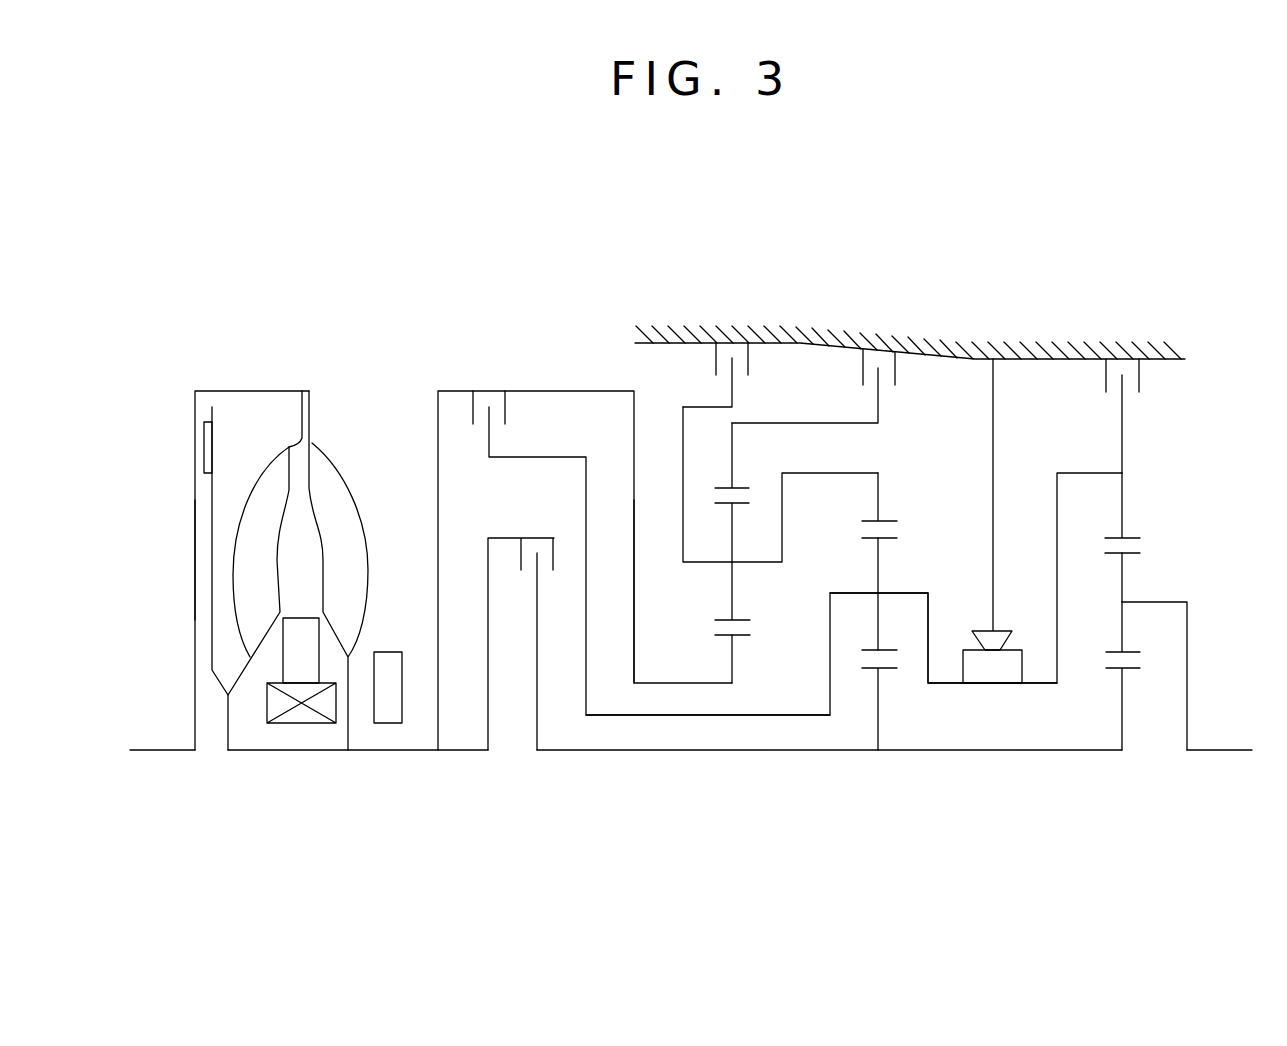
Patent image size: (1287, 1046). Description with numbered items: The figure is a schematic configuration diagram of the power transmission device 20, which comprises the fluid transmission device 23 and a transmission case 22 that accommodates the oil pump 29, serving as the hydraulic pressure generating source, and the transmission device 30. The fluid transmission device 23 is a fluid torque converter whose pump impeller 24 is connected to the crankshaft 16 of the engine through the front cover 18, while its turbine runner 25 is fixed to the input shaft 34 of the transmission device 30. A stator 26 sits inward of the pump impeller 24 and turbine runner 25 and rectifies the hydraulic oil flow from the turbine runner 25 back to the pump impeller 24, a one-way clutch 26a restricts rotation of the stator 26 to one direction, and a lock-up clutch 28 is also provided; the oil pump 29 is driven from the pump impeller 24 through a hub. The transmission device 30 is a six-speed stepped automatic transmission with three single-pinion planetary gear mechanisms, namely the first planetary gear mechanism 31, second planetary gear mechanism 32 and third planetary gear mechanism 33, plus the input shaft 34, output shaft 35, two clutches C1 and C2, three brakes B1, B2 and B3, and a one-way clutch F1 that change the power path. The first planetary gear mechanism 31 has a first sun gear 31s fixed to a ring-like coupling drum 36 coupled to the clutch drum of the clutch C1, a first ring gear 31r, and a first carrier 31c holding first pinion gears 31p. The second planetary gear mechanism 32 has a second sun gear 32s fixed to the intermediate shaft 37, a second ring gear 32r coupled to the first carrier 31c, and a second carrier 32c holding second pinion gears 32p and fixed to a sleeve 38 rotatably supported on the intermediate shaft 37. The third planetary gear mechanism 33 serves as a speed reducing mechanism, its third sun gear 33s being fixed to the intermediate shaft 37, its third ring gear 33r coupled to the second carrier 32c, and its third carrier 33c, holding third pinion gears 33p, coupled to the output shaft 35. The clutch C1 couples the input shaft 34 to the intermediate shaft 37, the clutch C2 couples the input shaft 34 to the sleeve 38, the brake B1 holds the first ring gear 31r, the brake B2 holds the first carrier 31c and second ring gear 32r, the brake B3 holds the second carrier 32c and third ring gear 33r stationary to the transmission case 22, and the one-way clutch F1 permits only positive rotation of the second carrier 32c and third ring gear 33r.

The crankshaft 16 is at (152, 752).
The front cover 18 is at (194, 556).
The power transmission device 20 is at (254, 570).
The transmission case 22 is at (1160, 366).
The fluid transmission device 23 is at (336, 436).
The pump impeller 24 is at (342, 488).
The turbine runner 25 is at (302, 391).
The stator 26 is at (300, 662).
The one-way clutch 26a is at (261, 712).
The lock-up clutch 28 is at (234, 435).
The oil pump 29 is at (364, 713).
The transmission device 30 is at (458, 363).
The first planetary gear mechanism 31 is at (759, 609).
The first carrier 31c is at (783, 556).
The first pinion gear 31p is at (735, 600).
The first ring gear 31r is at (736, 454).
The first sun gear 31s is at (735, 655).
The second planetary gear mechanism 32 is at (926, 635).
The second carrier 32c is at (943, 605).
The second pinion gear 32p is at (880, 556).
The second ring gear 32r is at (876, 505).
The second sun gear 32s is at (878, 688).
The third planetary gear mechanism 33 is at (1183, 642).
The third carrier 33c is at (1190, 640).
The third pinion gear 33p is at (1125, 580).
The third ring gear 33r is at (1125, 503).
The third sun gear 33s is at (1128, 692).
The input shaft 34 is at (428, 752).
The output shaft 35 is at (1232, 750).
The coupling drum 36 is at (634, 650).
The intermediate shaft 37 is at (1020, 752).
The sleeve 38 is at (778, 715).
The brake B1 is at (914, 381).
The brake B2 is at (766, 358).
The brake B3 is at (1097, 401).
The clutch C1 is at (521, 580).
The clutch C2 is at (513, 434).
The one-way clutch F1 is at (961, 674).